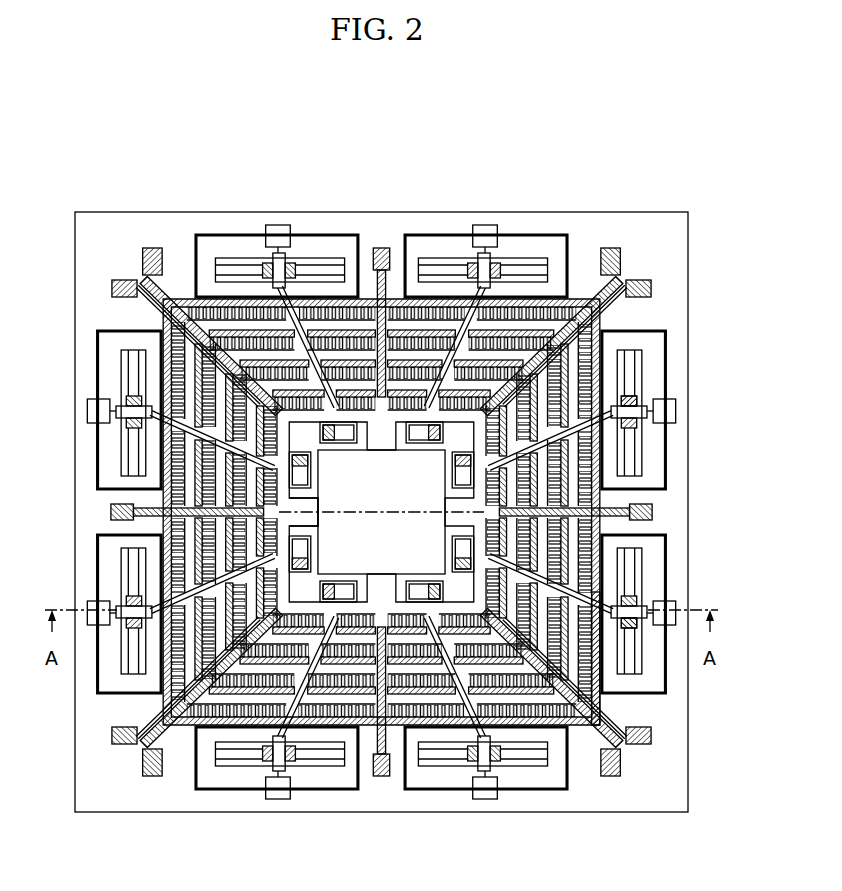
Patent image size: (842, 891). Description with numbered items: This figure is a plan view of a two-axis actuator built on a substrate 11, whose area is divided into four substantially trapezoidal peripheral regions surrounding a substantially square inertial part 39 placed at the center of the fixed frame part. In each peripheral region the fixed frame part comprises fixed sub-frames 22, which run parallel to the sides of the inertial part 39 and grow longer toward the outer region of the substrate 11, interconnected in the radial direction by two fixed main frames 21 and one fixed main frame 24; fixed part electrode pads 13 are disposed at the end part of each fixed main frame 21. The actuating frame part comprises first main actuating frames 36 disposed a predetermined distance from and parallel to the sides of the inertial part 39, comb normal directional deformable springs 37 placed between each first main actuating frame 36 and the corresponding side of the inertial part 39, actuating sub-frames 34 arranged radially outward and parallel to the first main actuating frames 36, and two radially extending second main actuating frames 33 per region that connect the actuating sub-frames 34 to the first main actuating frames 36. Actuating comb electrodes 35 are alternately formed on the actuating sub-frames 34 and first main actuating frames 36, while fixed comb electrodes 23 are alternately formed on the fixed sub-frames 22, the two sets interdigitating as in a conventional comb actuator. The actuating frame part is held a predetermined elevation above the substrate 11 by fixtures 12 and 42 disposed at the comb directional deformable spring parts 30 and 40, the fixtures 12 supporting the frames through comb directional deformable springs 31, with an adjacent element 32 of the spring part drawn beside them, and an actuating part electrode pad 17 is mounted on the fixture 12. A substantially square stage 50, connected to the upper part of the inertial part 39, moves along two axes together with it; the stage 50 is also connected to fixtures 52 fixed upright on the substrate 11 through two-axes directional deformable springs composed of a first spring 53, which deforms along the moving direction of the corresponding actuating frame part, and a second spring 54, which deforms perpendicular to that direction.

The substrate 11 is at (688, 312).
The fixture 12 is at (626, 397).
The fixed part electrode pad 13 is at (652, 290).
The actuating part electrode pad 17 is at (633, 600).
The fixed main frame 21 is at (160, 282).
The fixed sub-frame 22 is at (165, 316).
The fixed comb electrode 23 is at (575, 728).
The fixed main frame 24 is at (115, 510).
The comb directional deformable spring part 30 is at (318, 256).
The comb directional deformable spring 31 is at (640, 462).
The resonator frame 32 is at (636, 475).
The second main actuating frame 33 is at (603, 414).
The actuating sub-frame 34 is at (605, 678).
The actuating comb electrode 35 is at (590, 705).
The first main actuating frame 36 is at (452, 462).
The comb normal directional deformable spring 37 is at (308, 525).
The inertial part 39 is at (406, 508).
The comb directional deformable spring part 40 is at (440, 548).
The fixture 42 is at (315, 462).
The stage 50 is at (150, 742).
The fixture 52 is at (485, 225).
The first spring 53 is at (517, 235).
The second spring 54 is at (568, 255).